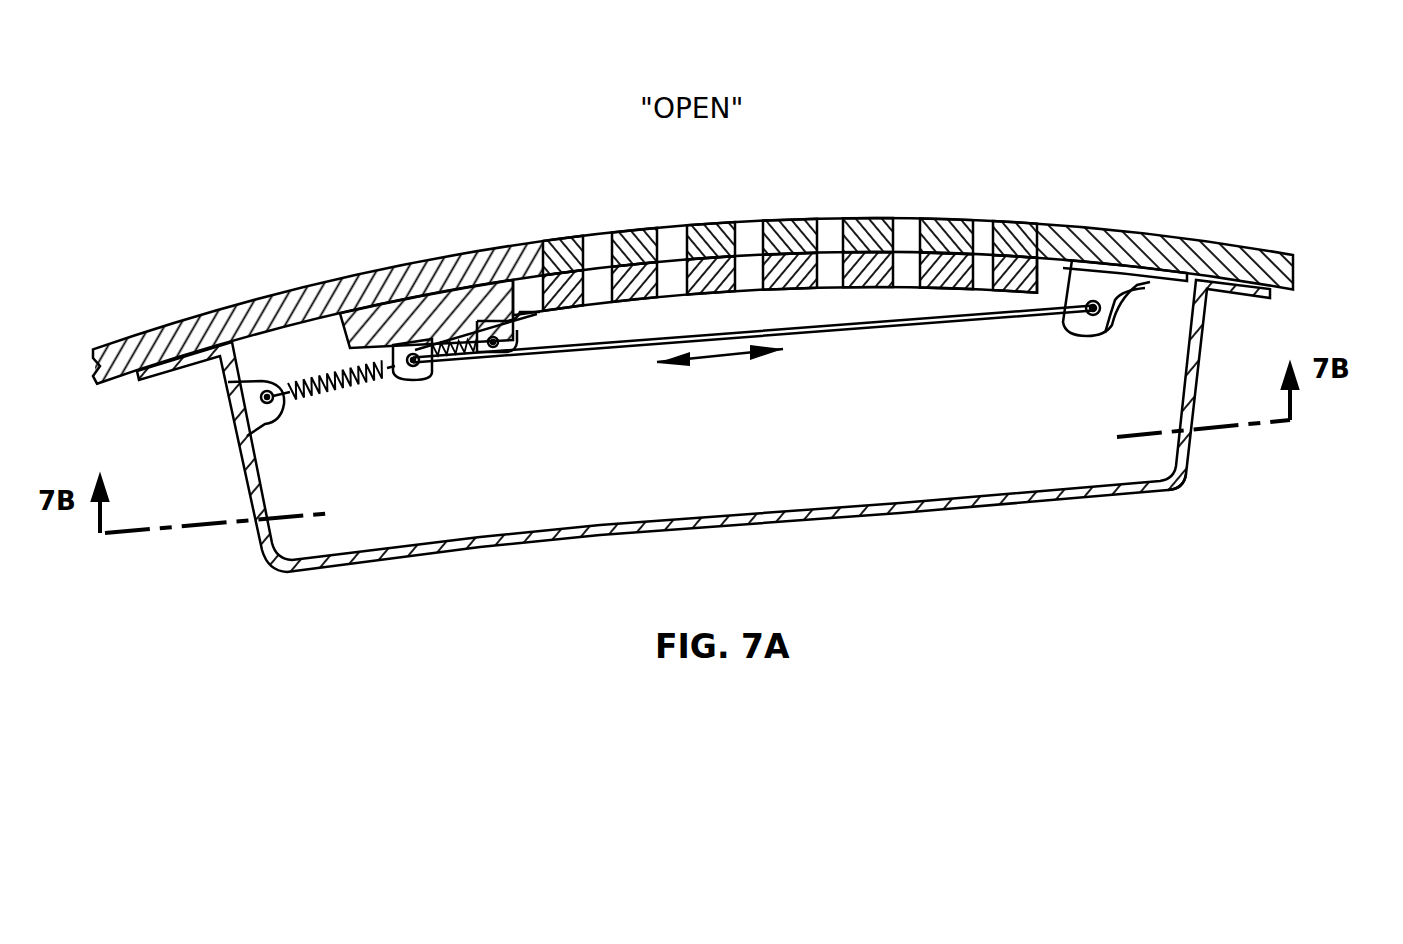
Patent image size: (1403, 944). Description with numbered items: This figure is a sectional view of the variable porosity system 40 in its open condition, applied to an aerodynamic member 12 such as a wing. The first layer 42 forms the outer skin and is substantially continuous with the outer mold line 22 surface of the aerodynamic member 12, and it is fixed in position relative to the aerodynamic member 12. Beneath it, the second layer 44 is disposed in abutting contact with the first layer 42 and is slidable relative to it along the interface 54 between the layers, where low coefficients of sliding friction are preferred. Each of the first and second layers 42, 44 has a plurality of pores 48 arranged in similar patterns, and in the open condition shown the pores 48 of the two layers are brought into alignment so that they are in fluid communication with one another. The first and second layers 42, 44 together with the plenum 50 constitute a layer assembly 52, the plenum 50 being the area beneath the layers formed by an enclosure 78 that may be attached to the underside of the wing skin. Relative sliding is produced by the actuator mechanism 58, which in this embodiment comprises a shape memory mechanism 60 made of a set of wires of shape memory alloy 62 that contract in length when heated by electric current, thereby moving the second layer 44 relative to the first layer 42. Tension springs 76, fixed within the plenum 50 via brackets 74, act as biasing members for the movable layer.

The aerodynamic member 12 is at (699, 275).
The outer mold line 22 is at (1180, 238).
The variable porosity system 40 is at (1192, 104).
The first layer 42 is at (400, 290).
The second layer 44 is at (362, 327).
The pores 48 is at (775, 228).
The plenum 50 is at (703, 431).
The layer assembly 52 is at (1010, 237).
The interface 54 is at (633, 258).
The actuator mechanism 58 is at (978, 312).
The shape memory mechanism 60 is at (786, 360).
The shape memory alloy 62 is at (720, 355).
The brackets 74 is at (423, 342).
The springs 76 is at (317, 373).
The enclosure 78 is at (1185, 470).